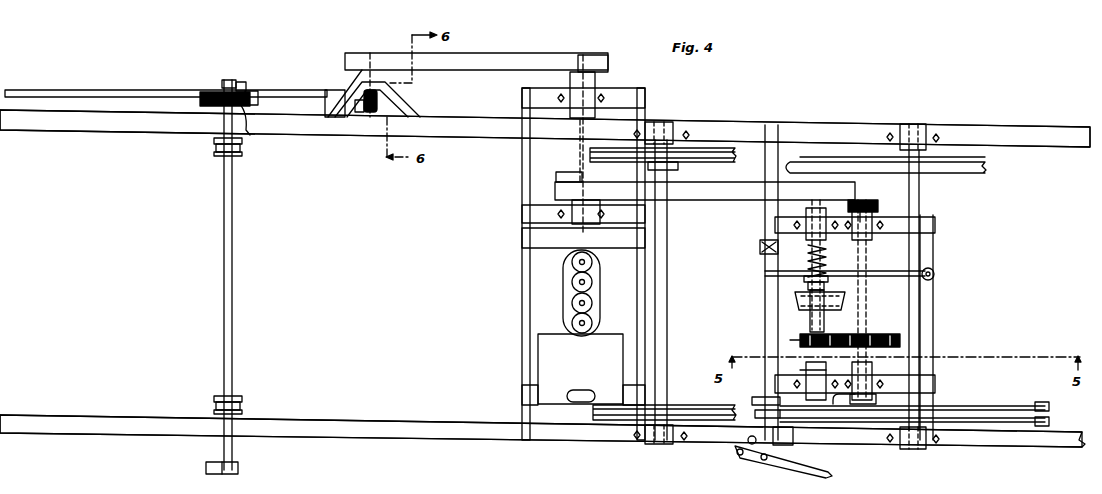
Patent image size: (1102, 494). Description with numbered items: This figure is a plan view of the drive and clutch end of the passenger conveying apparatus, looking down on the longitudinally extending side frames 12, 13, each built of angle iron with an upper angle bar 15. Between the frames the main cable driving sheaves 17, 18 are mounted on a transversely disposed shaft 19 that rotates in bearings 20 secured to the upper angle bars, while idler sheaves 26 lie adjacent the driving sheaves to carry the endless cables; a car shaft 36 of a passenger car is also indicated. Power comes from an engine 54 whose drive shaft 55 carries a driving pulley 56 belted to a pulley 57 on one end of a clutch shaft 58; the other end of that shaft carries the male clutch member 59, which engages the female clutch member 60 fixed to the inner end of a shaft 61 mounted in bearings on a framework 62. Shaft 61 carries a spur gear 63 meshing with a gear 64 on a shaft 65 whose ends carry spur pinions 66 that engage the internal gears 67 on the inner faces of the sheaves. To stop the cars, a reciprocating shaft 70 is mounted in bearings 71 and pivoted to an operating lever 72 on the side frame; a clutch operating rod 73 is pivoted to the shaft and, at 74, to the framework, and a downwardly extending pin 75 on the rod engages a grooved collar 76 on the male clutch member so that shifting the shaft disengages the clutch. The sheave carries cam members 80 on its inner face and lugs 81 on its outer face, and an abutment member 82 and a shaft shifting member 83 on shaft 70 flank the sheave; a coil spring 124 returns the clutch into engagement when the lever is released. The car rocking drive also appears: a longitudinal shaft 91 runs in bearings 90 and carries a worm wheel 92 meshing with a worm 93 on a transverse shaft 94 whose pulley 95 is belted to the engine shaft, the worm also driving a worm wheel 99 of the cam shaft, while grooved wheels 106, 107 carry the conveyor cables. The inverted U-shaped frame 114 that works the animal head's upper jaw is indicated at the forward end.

The side frame 12 is at (298, 440).
The side frame 13 is at (278, 108).
The upper angle bar 15 is at (484, 120).
The main driving sheave 17 is at (1002, 426).
The main driving sheave 18 is at (1004, 168).
The shaft 19 is at (920, 200).
The bearings 20 is at (928, 126).
The idler sheaves 26 is at (732, 152).
The cylindrical shaft 36 is at (568, 60).
The engine 54 is at (538, 350).
The drive shaft 55 is at (580, 145).
The driving pulley 56 is at (564, 172).
The pulley 57 is at (794, 186).
The clutch shaft 58 is at (826, 258).
The male clutch member 59 is at (810, 294).
The female clutch member 60 is at (797, 306).
The shaft 61 is at (806, 364).
The framework 62 is at (934, 372).
The spur gear 63 is at (798, 340).
The gear 64 is at (902, 340).
The shaft 65 is at (868, 307).
The spur pinions 66 is at (870, 188).
The internal gear 67 is at (876, 182).
The reciprocating shaft 70 is at (766, 384).
The bearings 71 is at (760, 246).
The operating lever 72 is at (798, 474).
The clutch operating rod 73 is at (896, 274).
The pivot 74 is at (932, 268).
The pin 75 is at (806, 278).
The grooved collar 76 is at (824, 284).
The cam members 80 is at (782, 407).
The lugs 81 is at (790, 446).
The abutment member 82 is at (758, 414).
The shaft shifting member 83 is at (753, 401).
The bearings 90 is at (212, 92).
The shaft 91 is at (166, 96).
The worm wheel 92 is at (368, 112).
The worm 93 is at (250, 134).
The transversely disposed shaft 94 is at (372, 80).
The pulley 95 is at (352, 53).
The worm wheel 99 is at (208, 98).
The grooved wheel 106 is at (236, 152).
The grooved wheel 107 is at (214, 406).
The inverted U-shaped frame 114 is at (230, 80).
The coil spring 124 is at (806, 248).